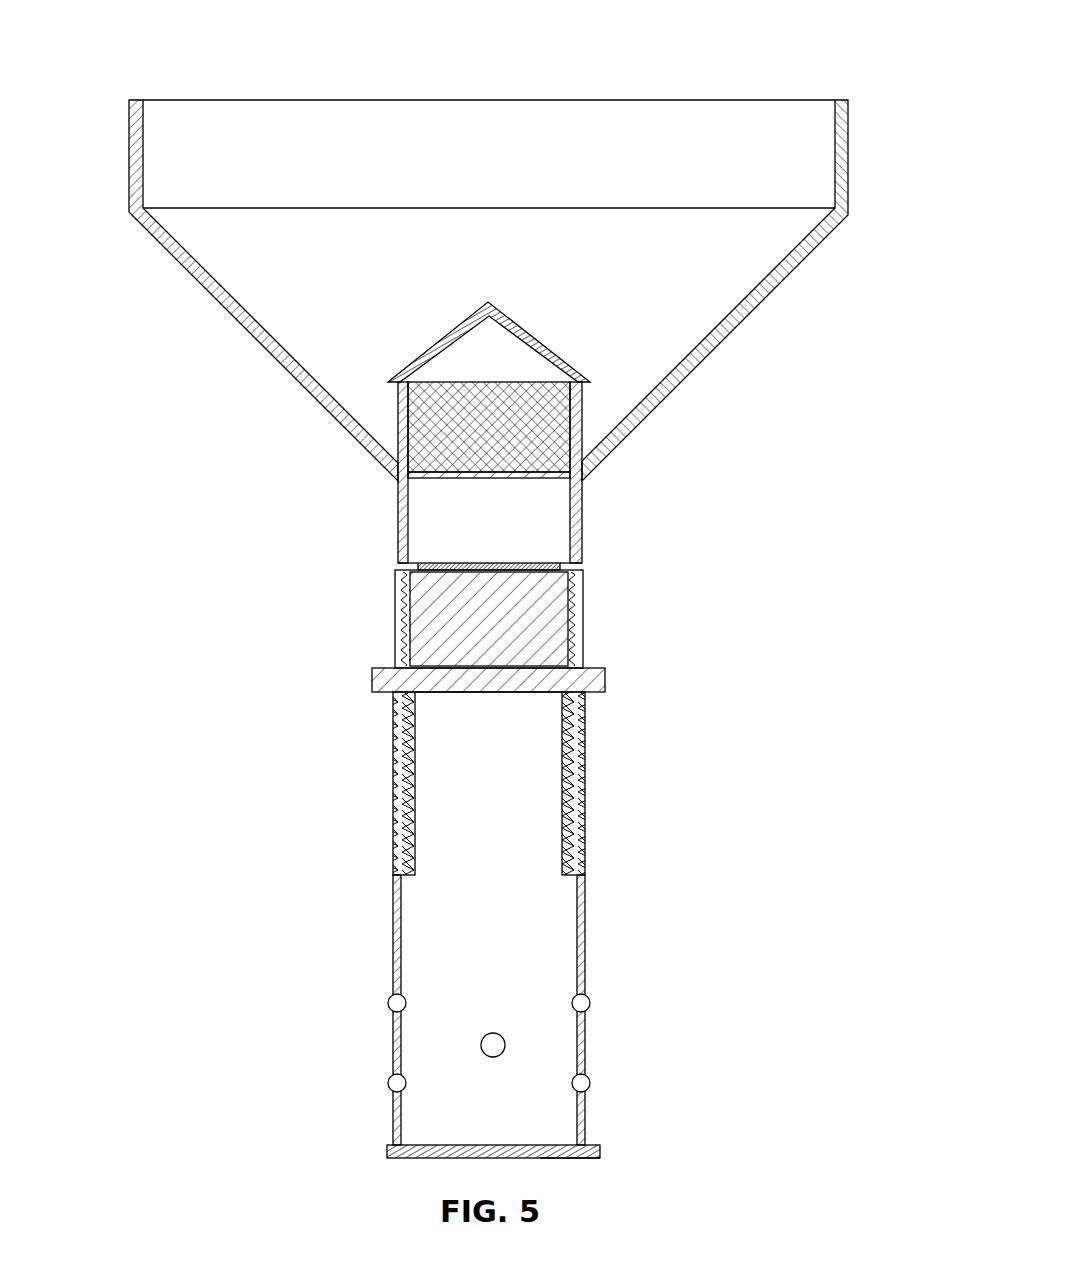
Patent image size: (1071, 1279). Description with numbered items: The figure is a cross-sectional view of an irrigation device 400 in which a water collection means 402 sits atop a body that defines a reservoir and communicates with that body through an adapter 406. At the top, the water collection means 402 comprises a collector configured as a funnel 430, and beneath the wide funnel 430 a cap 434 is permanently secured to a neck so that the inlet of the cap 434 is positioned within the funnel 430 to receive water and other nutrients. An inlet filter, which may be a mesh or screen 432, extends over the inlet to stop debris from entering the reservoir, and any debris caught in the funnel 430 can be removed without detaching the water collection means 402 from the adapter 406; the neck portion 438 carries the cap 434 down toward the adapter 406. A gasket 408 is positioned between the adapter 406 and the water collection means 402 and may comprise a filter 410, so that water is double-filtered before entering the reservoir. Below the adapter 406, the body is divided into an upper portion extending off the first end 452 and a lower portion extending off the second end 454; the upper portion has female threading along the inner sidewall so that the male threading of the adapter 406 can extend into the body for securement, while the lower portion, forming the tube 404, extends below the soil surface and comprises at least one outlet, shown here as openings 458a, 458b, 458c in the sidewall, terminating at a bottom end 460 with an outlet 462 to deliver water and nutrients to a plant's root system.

The irrigation device 400 is at (88, 60).
The water collection means 402 is at (140, 293).
The lower tube 404 is at (375, 874).
The adapter 406 is at (595, 682).
The gasket 408 is at (578, 565).
The filter 410 is at (436, 565).
The funnel 430 is at (494, 166).
The mesh screen 432 is at (555, 430).
The cap 434 is at (535, 335).
The upper tube 438 is at (405, 510).
The first end 452 is at (522, 697).
The second end 454 is at (585, 908).
The opening 458a is at (592, 1003).
The opening 458b is at (492, 1030).
The opening 458c is at (592, 1083).
The bottom plate 460 is at (385, 1152).
The outlet 462 is at (562, 1160).